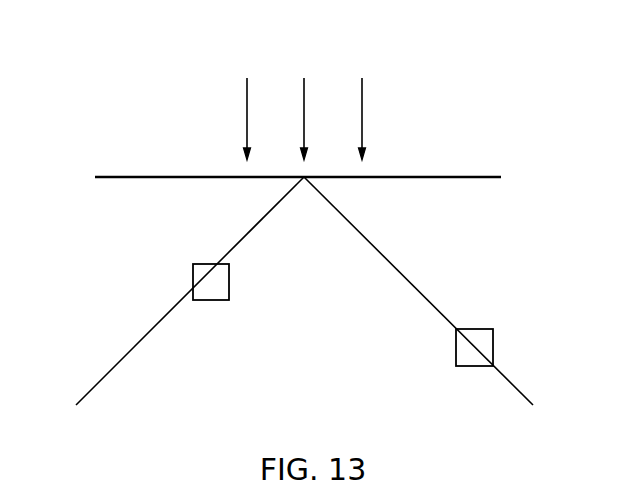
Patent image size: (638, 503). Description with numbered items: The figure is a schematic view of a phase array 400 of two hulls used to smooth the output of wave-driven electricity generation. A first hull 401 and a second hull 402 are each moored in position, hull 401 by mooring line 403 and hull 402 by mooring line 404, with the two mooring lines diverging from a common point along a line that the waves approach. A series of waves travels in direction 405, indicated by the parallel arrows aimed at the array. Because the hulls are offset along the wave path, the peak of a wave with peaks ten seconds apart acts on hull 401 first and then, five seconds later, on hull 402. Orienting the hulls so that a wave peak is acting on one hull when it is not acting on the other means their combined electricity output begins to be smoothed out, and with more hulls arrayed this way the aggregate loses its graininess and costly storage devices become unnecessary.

The phase array 400 is at (273, 177).
The hull 401 is at (211, 299).
The hull 402 is at (474, 363).
The mooring line 403 is at (182, 291).
The mooring line 404 is at (418, 291).
The direction 405 is at (305, 103).